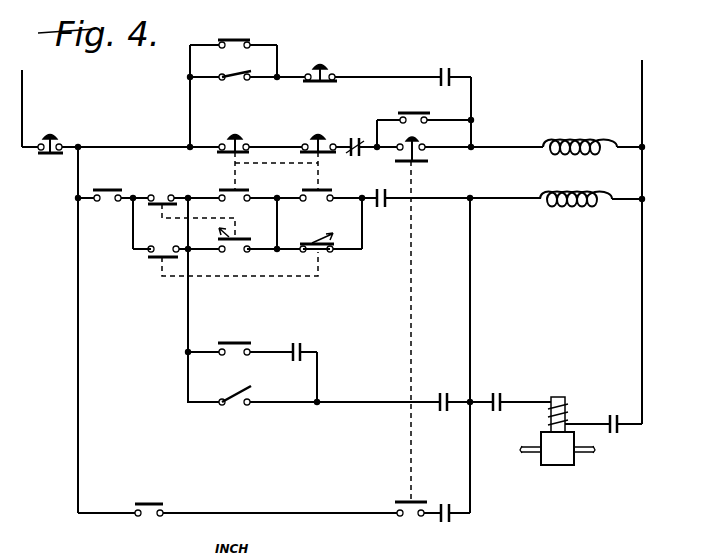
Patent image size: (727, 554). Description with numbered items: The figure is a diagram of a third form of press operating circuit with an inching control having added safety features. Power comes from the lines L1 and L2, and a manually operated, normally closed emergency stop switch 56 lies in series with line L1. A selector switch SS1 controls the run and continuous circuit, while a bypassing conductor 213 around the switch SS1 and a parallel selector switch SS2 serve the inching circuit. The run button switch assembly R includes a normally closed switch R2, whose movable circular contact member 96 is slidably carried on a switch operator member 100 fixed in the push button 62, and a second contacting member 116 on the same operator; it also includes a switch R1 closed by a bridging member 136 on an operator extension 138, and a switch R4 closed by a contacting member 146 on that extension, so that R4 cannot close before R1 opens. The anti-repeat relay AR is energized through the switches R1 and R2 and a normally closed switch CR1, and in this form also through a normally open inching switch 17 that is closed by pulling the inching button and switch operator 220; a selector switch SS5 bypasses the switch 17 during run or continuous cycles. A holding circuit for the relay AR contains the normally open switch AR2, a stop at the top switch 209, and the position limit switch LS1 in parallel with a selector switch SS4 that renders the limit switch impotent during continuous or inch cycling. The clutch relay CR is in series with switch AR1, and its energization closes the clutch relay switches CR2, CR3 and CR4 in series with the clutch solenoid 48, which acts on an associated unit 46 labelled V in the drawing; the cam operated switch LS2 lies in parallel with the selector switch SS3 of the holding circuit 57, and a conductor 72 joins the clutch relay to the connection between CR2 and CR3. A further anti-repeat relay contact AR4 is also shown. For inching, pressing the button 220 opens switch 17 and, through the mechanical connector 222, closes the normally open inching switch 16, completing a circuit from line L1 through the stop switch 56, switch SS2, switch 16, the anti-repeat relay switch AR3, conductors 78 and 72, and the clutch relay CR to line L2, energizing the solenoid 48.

The line L1 is at (20, 100).
The line L2 is at (638, 233).
The emergency stop switch 56 is at (45, 157).
The bypassing conductor 213 is at (127, 147).
The selector switch SS4 is at (228, 47).
The position limit switch LS1 is at (228, 83).
The stop at the top switch 209 is at (327, 70).
The normally open switch AR2 is at (450, 60).
The selector switch SS5 is at (400, 112).
The normally closed switch CR1 is at (352, 137).
The inching switch 17 is at (427, 158).
The inching button and switch operator 220 is at (419, 139).
The mechanical connector 222 is at (410, 447).
The anti-repeat relay AR is at (578, 144).
The clutch relay CR is at (565, 206).
The selector switch SS1 is at (100, 203).
The switch R1 is at (165, 194).
The bridging contacting member 136 is at (147, 258).
The operator extension 138 is at (228, 216).
The movable circular contact member 96 is at (222, 155).
The push button 62 is at (320, 136).
The normally closed switch R2 is at (246, 145).
The switch operator member 100 is at (305, 164).
The movable circular contacting member 116 is at (308, 189).
The normally open switch AR1 is at (383, 190).
The run button switch assembly R is at (332, 229).
The contacting member 146 is at (230, 255).
The switch R4 is at (226, 253).
The conductor 72 is at (471, 255).
The selector switch SS3 is at (232, 357).
The relay AR contact AR4 is at (301, 346).
The cam operated switch LS2 is at (232, 406).
The holding circuit 57 is at (375, 385).
The clutch relay switch CR2 is at (443, 390).
The clutch relay switch CR3 is at (498, 391).
The clutch solenoid 48 is at (567, 404).
The valve 46 is at (565, 463).
The clutch relay switch CR4 is at (613, 435).
The conductor 78 is at (471, 473).
The selector switch SS2 is at (165, 504).
The inching switch 16 is at (407, 518).
The anti-repeat relay switch AR3 is at (445, 524).